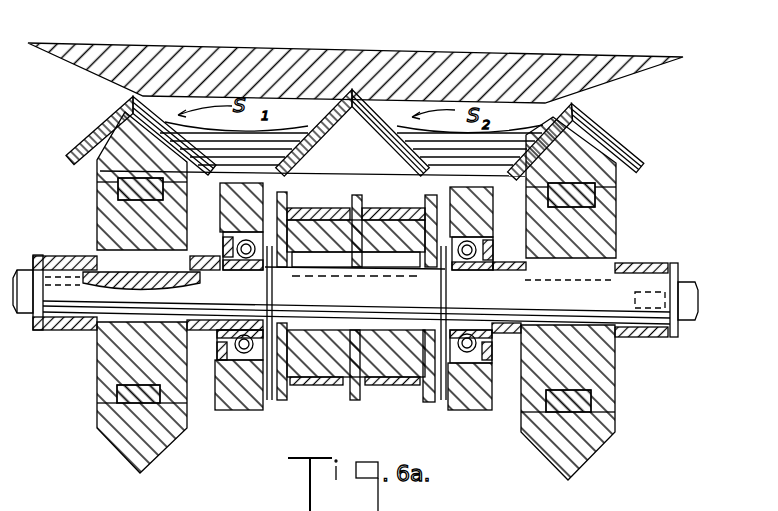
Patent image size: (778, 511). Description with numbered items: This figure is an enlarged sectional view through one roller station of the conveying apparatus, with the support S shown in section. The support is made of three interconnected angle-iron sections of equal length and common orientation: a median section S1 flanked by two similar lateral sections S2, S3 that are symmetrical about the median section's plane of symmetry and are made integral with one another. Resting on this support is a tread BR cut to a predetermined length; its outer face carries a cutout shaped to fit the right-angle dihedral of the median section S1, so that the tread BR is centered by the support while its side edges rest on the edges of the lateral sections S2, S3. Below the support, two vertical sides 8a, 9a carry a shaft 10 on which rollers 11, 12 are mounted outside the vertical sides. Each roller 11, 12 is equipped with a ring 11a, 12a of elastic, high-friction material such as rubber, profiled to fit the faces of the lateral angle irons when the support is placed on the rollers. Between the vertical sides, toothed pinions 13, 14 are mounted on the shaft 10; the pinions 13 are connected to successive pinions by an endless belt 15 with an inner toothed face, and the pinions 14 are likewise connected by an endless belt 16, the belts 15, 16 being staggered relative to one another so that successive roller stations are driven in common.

The tread BR is at (631, 53).
The median section S1 is at (338, 143).
The lateral section S2 is at (641, 160).
The lateral section S3 is at (77, 153).
The vertical side 8a is at (487, 200).
The vertical side 9a is at (228, 213).
The shaft 10 is at (78, 330).
The roller 11 is at (618, 235).
The ring 11a is at (608, 178).
The roller 12 is at (97, 223).
The ring 12a is at (97, 170).
The toothed pinion 13 is at (428, 402).
The toothed pinion 14 is at (283, 402).
The endless belt 15 is at (388, 387).
The endless belt 16 is at (335, 387).